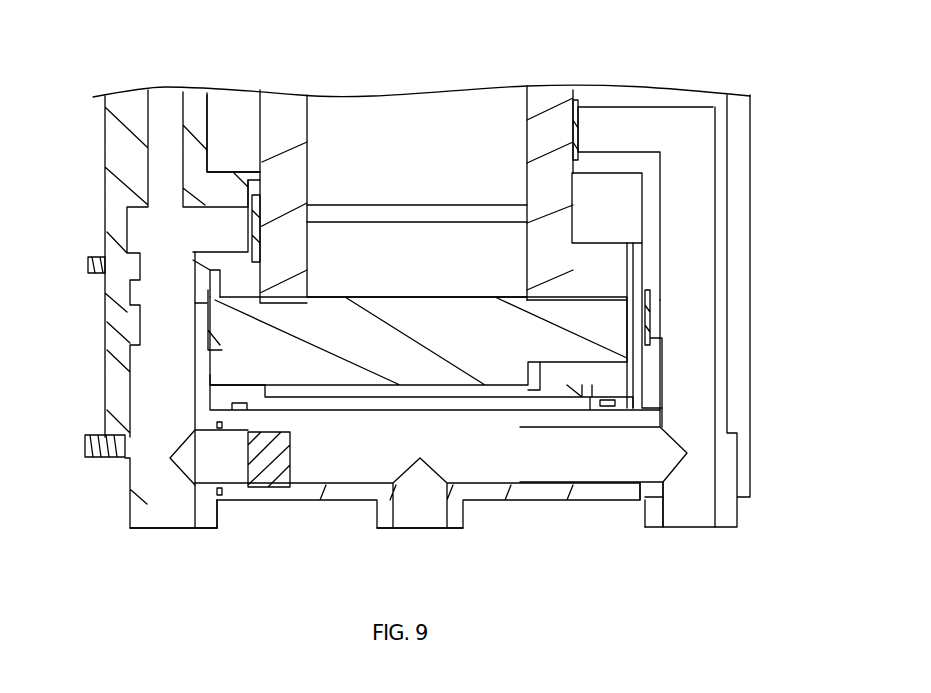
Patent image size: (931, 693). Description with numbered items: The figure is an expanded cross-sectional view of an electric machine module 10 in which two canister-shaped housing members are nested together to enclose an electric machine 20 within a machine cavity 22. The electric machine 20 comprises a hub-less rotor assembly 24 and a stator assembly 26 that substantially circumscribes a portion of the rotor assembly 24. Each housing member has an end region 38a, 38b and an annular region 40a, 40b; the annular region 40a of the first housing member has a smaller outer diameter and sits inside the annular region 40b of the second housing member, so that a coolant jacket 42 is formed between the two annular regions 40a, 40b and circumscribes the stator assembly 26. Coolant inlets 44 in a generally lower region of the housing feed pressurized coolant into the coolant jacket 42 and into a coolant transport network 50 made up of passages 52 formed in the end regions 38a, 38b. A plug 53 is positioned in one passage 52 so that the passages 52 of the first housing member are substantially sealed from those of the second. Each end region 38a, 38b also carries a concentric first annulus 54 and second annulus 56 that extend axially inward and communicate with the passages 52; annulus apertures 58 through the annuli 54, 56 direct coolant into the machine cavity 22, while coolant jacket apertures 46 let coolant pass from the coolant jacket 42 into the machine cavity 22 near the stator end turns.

The electric machine module 10 is at (662, 43).
The end region of the first housing member 38a is at (130, 100).
The end region of the second housing member 38b is at (723, 503).
The machine cavity 22 is at (245, 138).
The electric machine 20 is at (328, 112).
The rotor assembly 24 is at (465, 152).
The stator assembly 26 is at (590, 283).
The passage 52 is at (160, 180).
The second annulus 56 is at (255, 203).
The annulus aperture 58 is at (253, 263).
The first annulus 54 is at (207, 310).
The coolant jacket aperture 46 is at (253, 382).
The coolant transport network 50 is at (133, 280).
The coolant jacket 42 is at (560, 407).
The plug 53 is at (268, 497).
The annular region of the first housing member 40a is at (357, 393).
The annular region of the second housing member 40b is at (530, 485).
The coolant inlet 44 is at (167, 530).